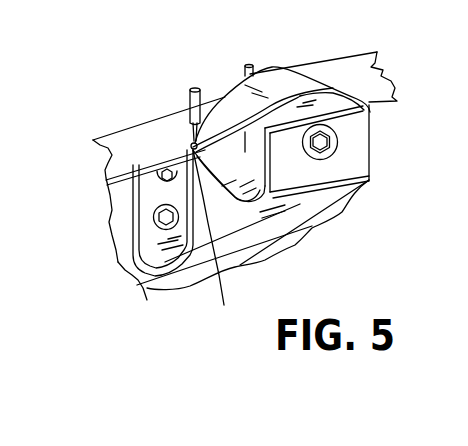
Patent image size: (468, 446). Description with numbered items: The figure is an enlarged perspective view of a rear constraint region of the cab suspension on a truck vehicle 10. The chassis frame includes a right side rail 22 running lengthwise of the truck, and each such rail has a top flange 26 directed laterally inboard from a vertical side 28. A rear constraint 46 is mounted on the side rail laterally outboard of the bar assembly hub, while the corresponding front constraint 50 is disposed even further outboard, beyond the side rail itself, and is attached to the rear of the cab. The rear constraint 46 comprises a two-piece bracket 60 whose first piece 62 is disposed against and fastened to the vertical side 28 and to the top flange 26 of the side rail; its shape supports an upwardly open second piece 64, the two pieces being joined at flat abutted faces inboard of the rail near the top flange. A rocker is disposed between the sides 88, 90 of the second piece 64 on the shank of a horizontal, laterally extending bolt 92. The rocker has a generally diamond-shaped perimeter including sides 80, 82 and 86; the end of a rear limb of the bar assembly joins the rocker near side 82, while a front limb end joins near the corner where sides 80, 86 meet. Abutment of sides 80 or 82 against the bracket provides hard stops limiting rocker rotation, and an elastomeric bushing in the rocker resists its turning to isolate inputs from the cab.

The truck vehicle 10 is at (463, 393).
The right side rail 22 is at (117, 227).
The top flange 26 is at (393, 82).
The vertical side 28 is at (128, 252).
The left rear constraint 46 is at (369, 180).
The left front constraint 50 is at (458, 257).
The two-piece bracket 60 is at (278, 253).
The first piece 62 is at (147, 300).
The second piece 64 is at (360, 153).
The rocker side 80 is at (227, 100).
The rocker side 82 is at (333, 88).
The rocker side 86 is at (224, 305).
The side of second piece 88 is at (352, 132).
The side of second piece 90 is at (204, 93).
The bolt 92 is at (320, 144).